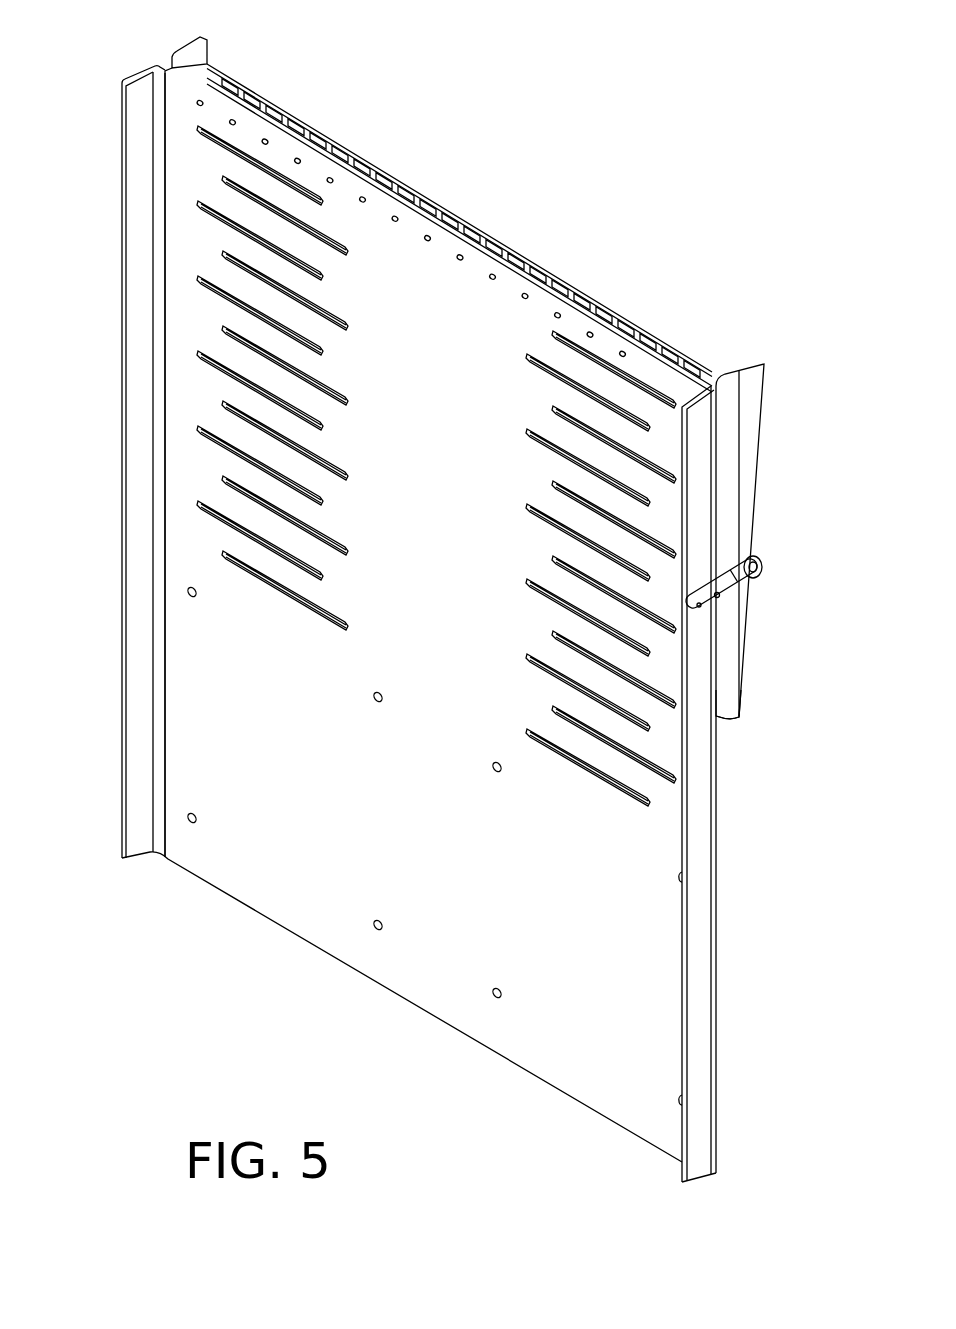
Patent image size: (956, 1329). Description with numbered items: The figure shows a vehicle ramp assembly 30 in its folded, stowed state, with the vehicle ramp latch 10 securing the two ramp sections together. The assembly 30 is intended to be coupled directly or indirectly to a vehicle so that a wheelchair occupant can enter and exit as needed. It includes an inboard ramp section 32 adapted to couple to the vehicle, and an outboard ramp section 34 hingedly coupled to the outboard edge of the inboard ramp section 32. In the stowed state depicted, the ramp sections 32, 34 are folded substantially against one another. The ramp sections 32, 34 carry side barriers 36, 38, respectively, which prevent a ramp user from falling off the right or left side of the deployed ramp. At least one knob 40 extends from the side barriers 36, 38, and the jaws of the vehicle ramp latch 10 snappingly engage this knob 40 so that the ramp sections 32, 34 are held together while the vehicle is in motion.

The vehicle ramp latch 10 is at (730, 588).
The vehicle ramp assembly 30 is at (577, 153).
The inboard ramp section 32 is at (560, 1073).
The outboard ramp section 34 is at (735, 693).
The side barrier 36 is at (207, 62).
The side barrier 38 is at (132, 372).
The knob 40 is at (120, 272).